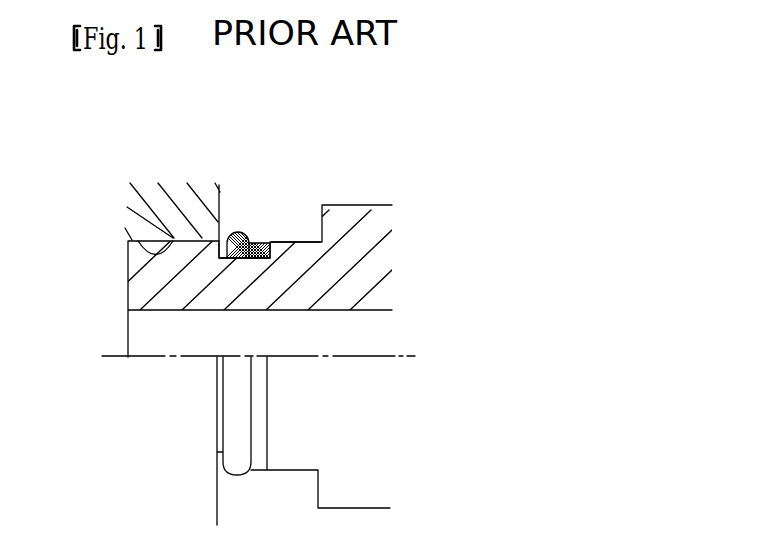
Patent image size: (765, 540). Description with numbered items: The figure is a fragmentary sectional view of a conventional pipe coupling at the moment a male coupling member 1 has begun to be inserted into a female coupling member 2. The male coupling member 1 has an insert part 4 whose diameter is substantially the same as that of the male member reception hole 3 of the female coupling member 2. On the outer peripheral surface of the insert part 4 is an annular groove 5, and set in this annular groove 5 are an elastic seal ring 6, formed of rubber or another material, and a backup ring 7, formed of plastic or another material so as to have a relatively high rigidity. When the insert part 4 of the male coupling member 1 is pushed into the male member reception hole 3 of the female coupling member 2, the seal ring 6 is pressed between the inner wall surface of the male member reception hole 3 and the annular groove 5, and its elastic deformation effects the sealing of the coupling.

The male coupling member 1 is at (374, 168).
The female coupling member 2 is at (188, 144).
The male member reception hole 3 is at (129, 240).
The insert part 4 is at (285, 240).
The annular groove 5 is at (222, 254).
The elastic seal ring 6 is at (243, 235).
The backup ring 7 is at (261, 240).